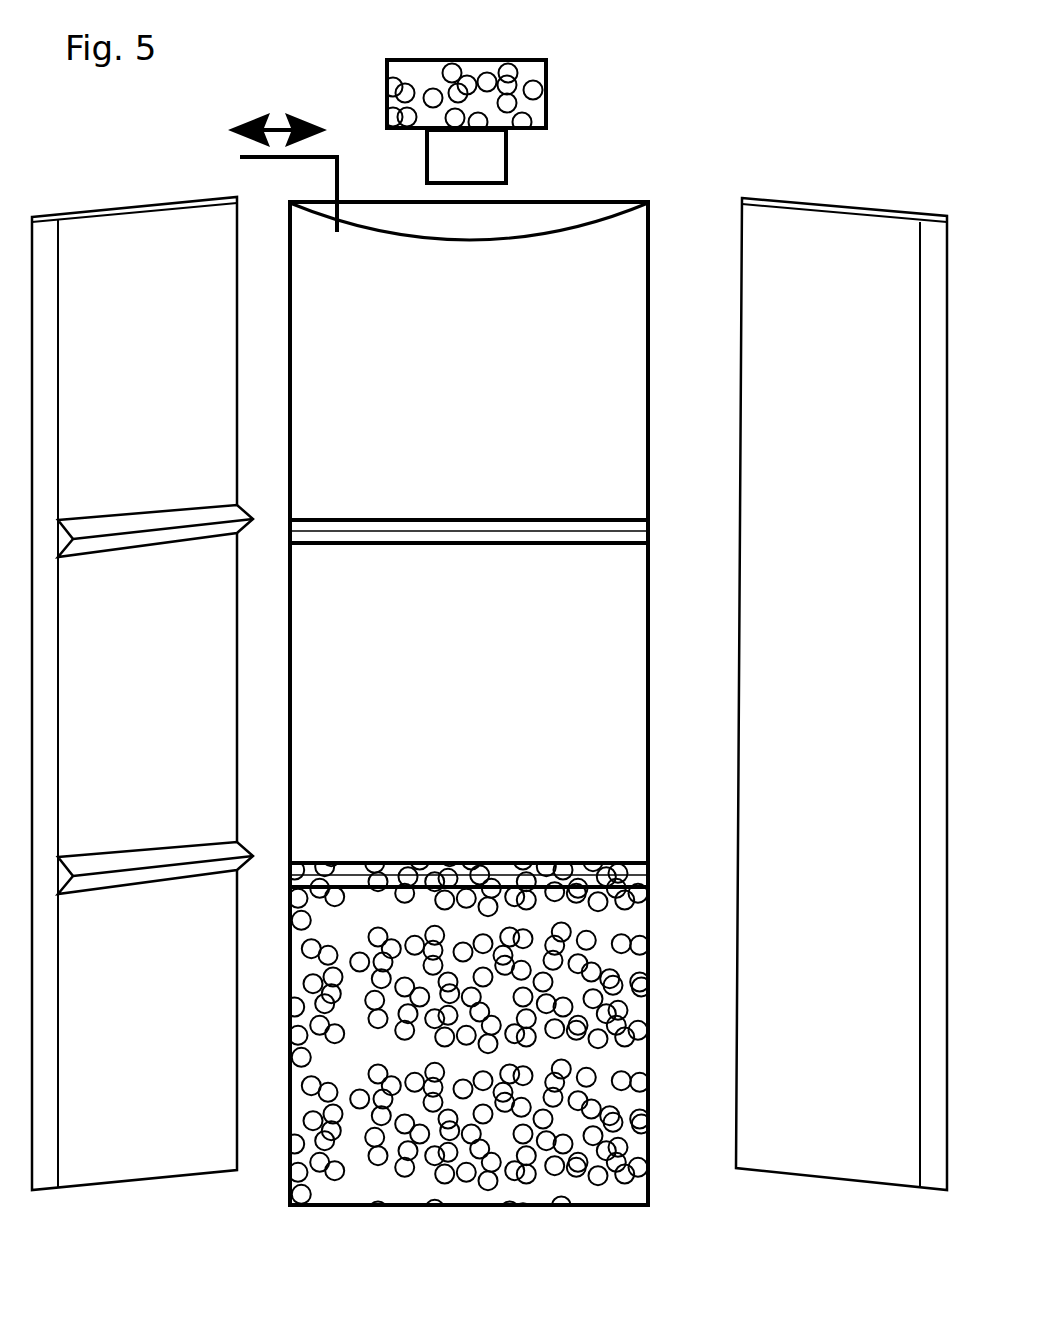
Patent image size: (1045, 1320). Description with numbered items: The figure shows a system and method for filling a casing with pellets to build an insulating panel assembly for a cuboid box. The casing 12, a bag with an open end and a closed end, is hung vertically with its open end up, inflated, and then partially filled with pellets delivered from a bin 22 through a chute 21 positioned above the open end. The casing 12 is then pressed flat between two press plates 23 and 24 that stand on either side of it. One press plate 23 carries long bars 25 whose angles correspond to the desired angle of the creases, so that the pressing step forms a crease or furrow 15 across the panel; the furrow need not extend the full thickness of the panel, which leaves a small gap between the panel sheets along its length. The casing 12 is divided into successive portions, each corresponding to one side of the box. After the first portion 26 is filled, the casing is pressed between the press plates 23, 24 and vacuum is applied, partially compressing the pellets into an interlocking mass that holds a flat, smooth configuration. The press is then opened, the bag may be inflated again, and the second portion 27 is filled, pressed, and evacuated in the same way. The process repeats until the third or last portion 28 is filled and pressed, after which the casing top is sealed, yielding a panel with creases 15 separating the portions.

The casing 12 is at (653, 225).
The crease 15 is at (653, 534).
The chute 21 is at (510, 140).
The bin 22 is at (549, 87).
The press plate 23 is at (70, 212).
The press plate 24 is at (822, 200).
The long bars 25 is at (138, 533).
The first portion 26 is at (653, 995).
The second portion 27 is at (653, 737).
The third portion 28 is at (653, 432).